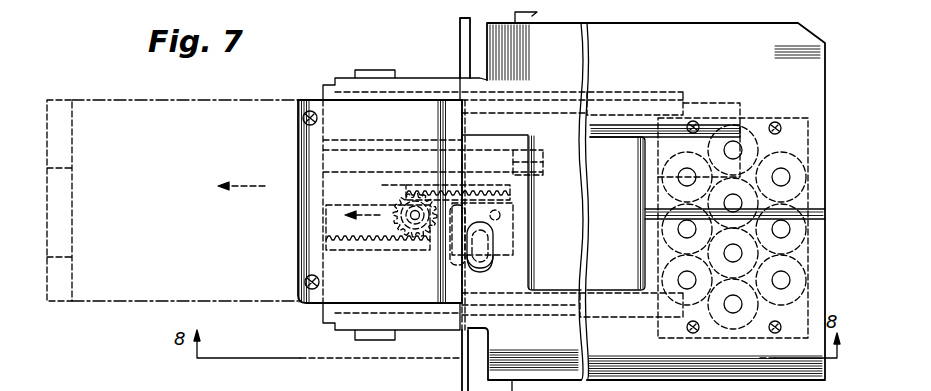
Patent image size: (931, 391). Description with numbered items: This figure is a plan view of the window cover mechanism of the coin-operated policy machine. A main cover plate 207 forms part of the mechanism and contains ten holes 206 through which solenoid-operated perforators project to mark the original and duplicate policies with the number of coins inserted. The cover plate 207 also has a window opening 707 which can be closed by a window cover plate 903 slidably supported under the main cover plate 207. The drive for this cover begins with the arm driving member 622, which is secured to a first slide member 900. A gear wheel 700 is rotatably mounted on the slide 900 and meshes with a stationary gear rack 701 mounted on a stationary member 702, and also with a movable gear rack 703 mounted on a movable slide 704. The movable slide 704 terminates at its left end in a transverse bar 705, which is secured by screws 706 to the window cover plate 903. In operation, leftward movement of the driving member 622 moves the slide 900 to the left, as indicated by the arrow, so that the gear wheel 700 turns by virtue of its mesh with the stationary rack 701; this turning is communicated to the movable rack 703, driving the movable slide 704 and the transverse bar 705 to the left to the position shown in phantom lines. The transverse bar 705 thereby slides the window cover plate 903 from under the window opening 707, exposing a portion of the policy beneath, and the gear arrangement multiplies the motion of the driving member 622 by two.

The cover plate 207 is at (643, 201).
The holes 206 is at (780, 175).
The window cover plate 903 is at (153, 108).
The transverse bar 705 is at (72, 118).
The screws 706 is at (308, 111).
The window opening 707 is at (610, 140).
The first slide member 900 is at (327, 208).
The gear wheel 700 is at (389, 197).
The stationary gear rack 701 is at (372, 247).
The stationary member 702 is at (328, 231).
The movable gear rack 703 is at (471, 200).
The movable slide 704 is at (382, 185).
The arm driving member 622 is at (494, 266).